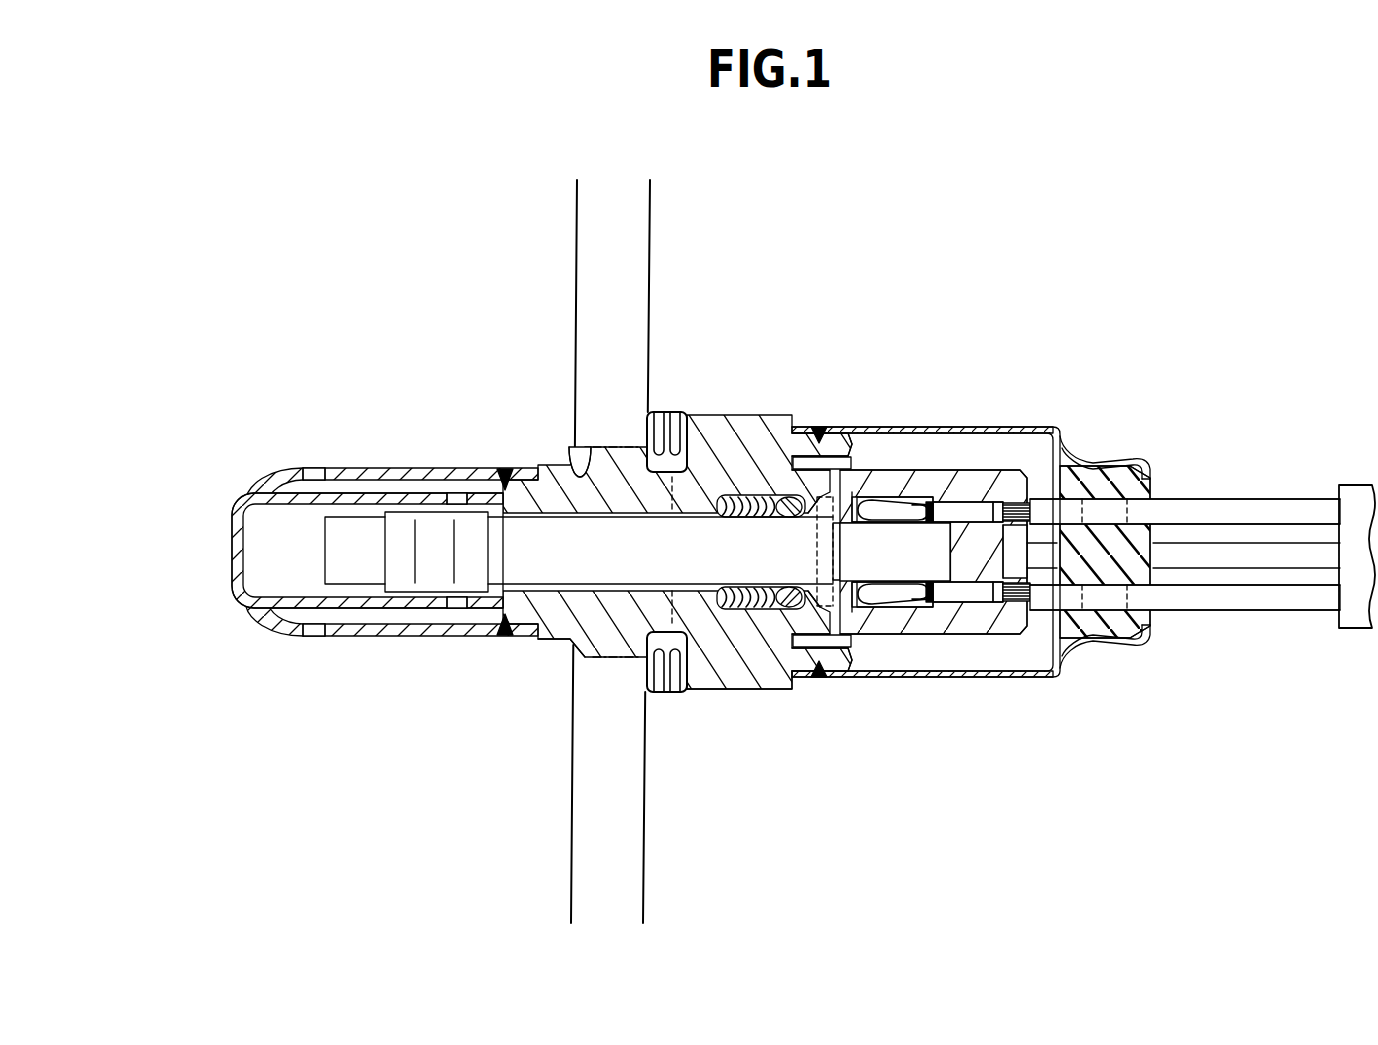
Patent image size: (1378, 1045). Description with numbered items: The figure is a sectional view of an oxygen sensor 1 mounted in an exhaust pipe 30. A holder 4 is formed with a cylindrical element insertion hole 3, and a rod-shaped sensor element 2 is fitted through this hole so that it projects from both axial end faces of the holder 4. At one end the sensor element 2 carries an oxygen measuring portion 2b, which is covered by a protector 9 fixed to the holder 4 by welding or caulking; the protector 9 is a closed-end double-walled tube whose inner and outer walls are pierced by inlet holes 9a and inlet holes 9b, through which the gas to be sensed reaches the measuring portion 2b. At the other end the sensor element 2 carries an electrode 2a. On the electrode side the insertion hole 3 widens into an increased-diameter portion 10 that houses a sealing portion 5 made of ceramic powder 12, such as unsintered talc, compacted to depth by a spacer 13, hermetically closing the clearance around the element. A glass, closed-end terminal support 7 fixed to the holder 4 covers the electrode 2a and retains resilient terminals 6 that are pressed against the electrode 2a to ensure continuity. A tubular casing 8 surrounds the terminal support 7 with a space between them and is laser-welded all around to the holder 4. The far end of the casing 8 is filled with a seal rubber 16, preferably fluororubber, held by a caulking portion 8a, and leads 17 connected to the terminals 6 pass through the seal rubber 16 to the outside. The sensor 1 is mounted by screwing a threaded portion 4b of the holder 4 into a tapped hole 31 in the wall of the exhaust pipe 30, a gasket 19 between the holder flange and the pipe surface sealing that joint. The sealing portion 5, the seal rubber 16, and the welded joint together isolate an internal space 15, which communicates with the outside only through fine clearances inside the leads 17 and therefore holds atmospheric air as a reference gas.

The oxygen sensor 1 is at (1228, 395).
The sensor element 2 is at (695, 575).
The electrode 2a is at (855, 500).
The oxygen measuring portion 2b is at (381, 450).
The element insertion hole 3 is at (700, 525).
The holder 4 is at (770, 683).
The threaded portion 4b is at (598, 660).
The sealing portion 5 is at (777, 423).
The terminal 6 is at (905, 506).
The terminal support 7 is at (988, 625).
The tubular casing 8 is at (1027, 682).
The caulking portion 8a is at (1149, 478).
The protector 9 is at (343, 555).
The inlet holes of inner protector 9a is at (456, 493).
The inlet holes of outer protector 9b is at (311, 468).
The increased-diameter portion 10 is at (738, 495).
The ceramic powder 12 is at (752, 497).
The spacer 13 is at (785, 498).
The internal space 15 is at (945, 502).
The seal rubber 16 is at (1097, 485).
The lead 17 is at (1325, 515).
The gasket 19 is at (655, 412).
The exhaust pipe 30 is at (577, 218).
The tapped hole 31 is at (577, 455).